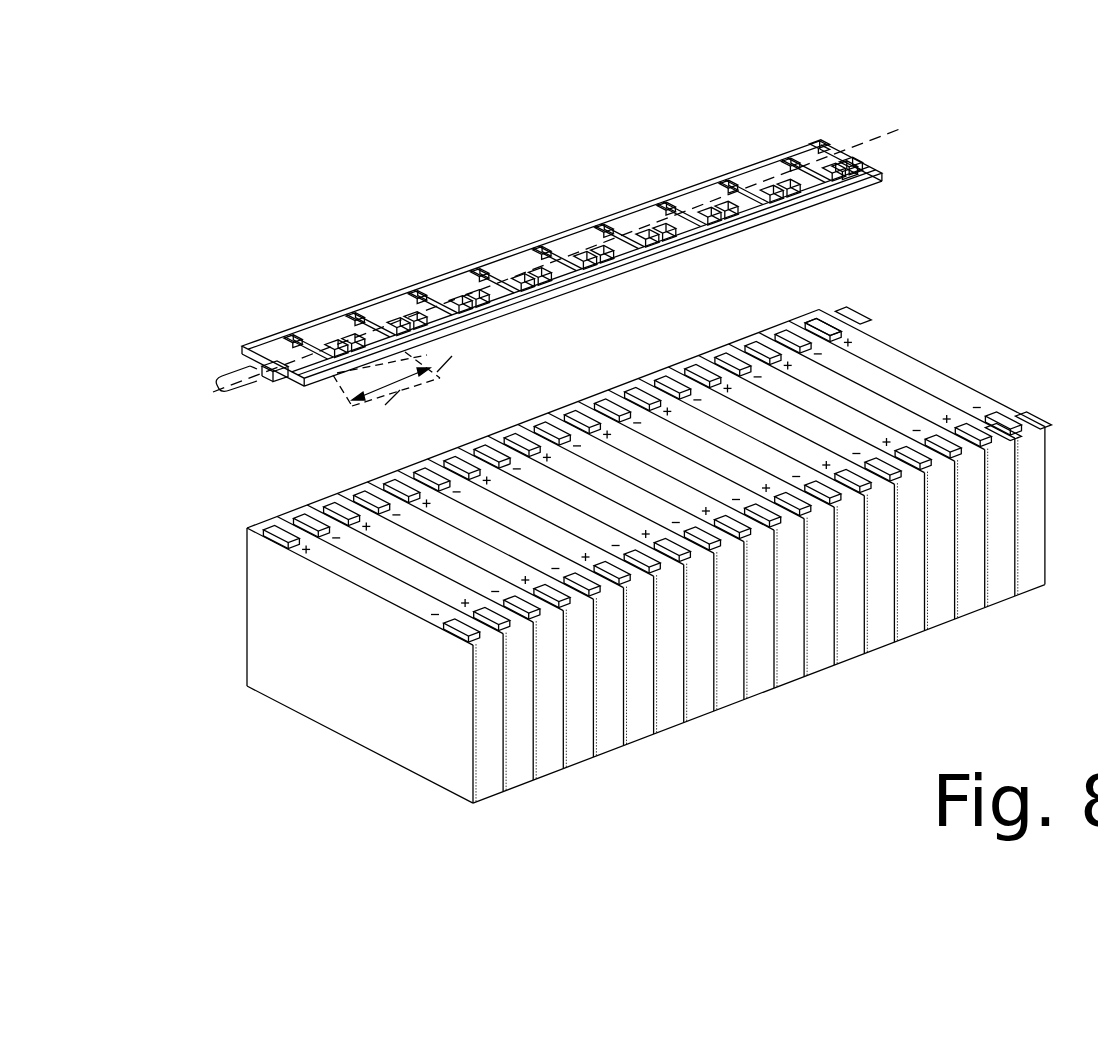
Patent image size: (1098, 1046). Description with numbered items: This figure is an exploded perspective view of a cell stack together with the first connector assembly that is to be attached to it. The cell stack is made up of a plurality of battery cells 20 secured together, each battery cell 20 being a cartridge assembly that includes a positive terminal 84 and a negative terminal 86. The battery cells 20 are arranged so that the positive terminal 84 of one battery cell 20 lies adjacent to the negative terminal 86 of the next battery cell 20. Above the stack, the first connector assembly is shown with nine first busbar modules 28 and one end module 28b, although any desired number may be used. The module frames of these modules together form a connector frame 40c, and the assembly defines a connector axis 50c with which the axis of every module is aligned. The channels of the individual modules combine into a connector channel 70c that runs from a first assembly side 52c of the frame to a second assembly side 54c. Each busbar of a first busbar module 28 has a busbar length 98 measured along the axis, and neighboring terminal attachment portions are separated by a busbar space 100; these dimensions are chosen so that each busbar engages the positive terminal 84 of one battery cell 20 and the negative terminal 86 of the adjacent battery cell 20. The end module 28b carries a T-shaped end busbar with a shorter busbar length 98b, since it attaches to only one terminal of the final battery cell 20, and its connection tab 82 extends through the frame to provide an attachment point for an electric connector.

The battery cell 20 is at (667, 581).
The first busbar module 28 is at (298, 295).
The end module 28b is at (522, 286).
The connector frame 40c is at (557, 233).
The connector axis 50c is at (893, 130).
The first assembly side 52c is at (298, 388).
The second assembly side 54c is at (832, 142).
The connector channel 70c is at (863, 165).
The connection tab 82 is at (250, 380).
The positive terminal 84 is at (822, 320).
The negative terminal 86 is at (790, 322).
The busbar length 98 is at (432, 386).
The busbar length 98b is at (366, 410).
The busbar space 100 is at (455, 363).